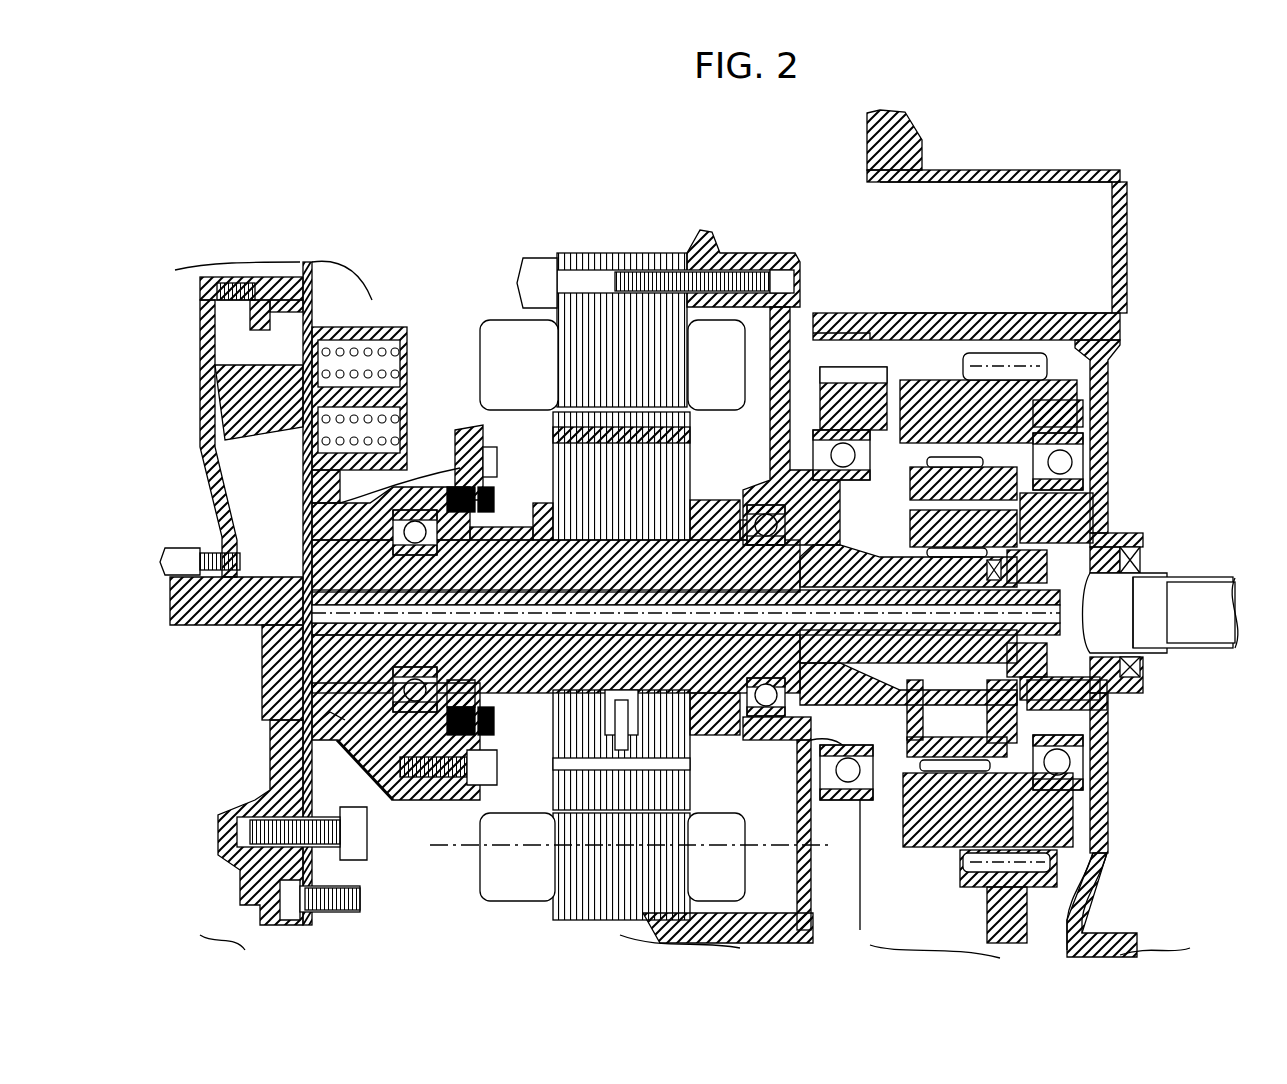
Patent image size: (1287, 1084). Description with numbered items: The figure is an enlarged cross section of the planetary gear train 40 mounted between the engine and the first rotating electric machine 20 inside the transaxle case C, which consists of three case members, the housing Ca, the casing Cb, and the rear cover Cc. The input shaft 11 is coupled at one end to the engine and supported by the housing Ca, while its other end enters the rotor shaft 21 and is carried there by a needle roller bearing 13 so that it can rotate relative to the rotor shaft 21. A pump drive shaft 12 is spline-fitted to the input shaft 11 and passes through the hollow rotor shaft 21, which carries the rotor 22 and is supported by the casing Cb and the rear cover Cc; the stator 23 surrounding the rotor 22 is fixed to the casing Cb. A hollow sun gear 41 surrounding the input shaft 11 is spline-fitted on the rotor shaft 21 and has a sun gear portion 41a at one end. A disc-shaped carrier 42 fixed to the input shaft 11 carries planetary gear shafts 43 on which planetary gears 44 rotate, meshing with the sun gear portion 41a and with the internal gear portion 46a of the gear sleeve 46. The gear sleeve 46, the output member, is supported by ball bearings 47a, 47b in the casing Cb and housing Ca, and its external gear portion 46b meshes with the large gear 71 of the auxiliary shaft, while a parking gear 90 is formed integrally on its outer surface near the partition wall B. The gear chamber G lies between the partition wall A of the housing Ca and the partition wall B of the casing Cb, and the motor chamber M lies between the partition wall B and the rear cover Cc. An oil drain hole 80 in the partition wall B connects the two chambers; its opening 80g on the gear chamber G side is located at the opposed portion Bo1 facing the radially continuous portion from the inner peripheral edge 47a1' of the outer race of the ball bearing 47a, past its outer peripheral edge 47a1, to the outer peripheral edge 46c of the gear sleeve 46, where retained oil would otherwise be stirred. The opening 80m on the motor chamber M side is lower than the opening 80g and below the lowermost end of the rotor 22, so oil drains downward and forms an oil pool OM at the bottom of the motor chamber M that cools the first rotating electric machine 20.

The input shaft 11 is at (1197, 586).
The pump drive shaft 12 is at (497, 645).
The needle roller bearing 13 is at (1060, 610).
The first rotating electric machine 20 is at (503, 282).
The rotor shaft 21 is at (497, 540).
The rotor 22 is at (557, 735).
The stator 23 is at (565, 318).
The planetary gear train 40 is at (948, 345).
The sun gear 41 is at (848, 668).
The sun gear portion 41a is at (966, 685).
The carrier 42 is at (1055, 712).
The planetary gear shafts 43 is at (910, 492).
The planetary gear 44 is at (910, 552).
The gear sleeve 46 is at (1100, 398).
The internal gear portion 46a is at (935, 425).
The external gear portion 46b is at (1003, 362).
The outer peripheral edge 46c is at (838, 372).
The ball bearing 47a is at (850, 775).
The outer peripheral edge 47a1 is at (770, 426).
The inner peripheral edge 47a1' is at (766, 455).
The ball bearing 47b is at (1062, 762).
The large gear 71 is at (968, 885).
The oil drain hole 80 is at (790, 804).
The opening on the gear chamber side 80g is at (820, 830).
The opening on the motor chamber side 80m is at (808, 815).
The parking gear 90 is at (865, 375).
The opposed portion Bo1 is at (800, 420).
The partition wall A is at (1105, 440).
The partition wall B is at (815, 885).
The transaxle case C is at (700, 140).
The housing Ca is at (870, 185).
The casing Cb is at (752, 262).
The rear cover Cc is at (306, 292).
The gear chamber G is at (1050, 908).
The motor chamber M is at (535, 432).
The oil pool OM is at (604, 847).